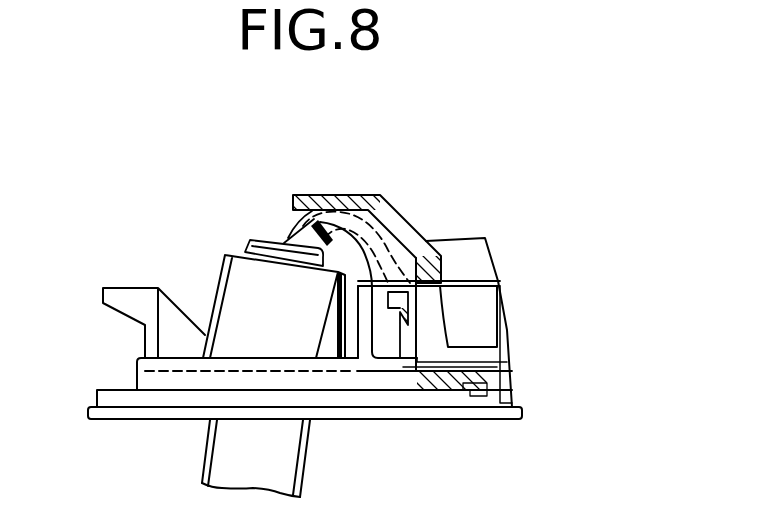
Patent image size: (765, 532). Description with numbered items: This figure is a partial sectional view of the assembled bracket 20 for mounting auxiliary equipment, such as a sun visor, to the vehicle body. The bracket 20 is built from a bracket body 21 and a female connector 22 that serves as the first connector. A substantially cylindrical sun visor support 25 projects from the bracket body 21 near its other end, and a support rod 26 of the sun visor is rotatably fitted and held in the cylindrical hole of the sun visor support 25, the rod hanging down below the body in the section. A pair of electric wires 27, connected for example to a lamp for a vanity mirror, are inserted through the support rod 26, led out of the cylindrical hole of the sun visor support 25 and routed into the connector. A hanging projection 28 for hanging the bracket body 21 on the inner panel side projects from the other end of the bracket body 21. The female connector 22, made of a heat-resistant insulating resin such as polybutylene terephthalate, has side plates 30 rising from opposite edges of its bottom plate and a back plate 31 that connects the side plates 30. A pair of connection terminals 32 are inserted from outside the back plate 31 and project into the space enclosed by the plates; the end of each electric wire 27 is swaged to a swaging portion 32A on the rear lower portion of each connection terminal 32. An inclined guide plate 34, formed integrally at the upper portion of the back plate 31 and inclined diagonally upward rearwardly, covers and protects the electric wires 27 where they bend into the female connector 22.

The bracket 20 is at (466, 196).
The bracket body 21 is at (94, 380).
The female connector 22 is at (520, 288).
The sun visor support 25 is at (230, 280).
The support rod 26 is at (308, 462).
The electric wire 27 is at (287, 233).
The hanging projection 28 is at (130, 298).
The side plate 30 is at (486, 253).
The back plate 31 is at (425, 257).
The connection terminal 32 is at (490, 327).
The swaging portion 32A is at (398, 331).
The inclined guide plate 34 is at (392, 198).